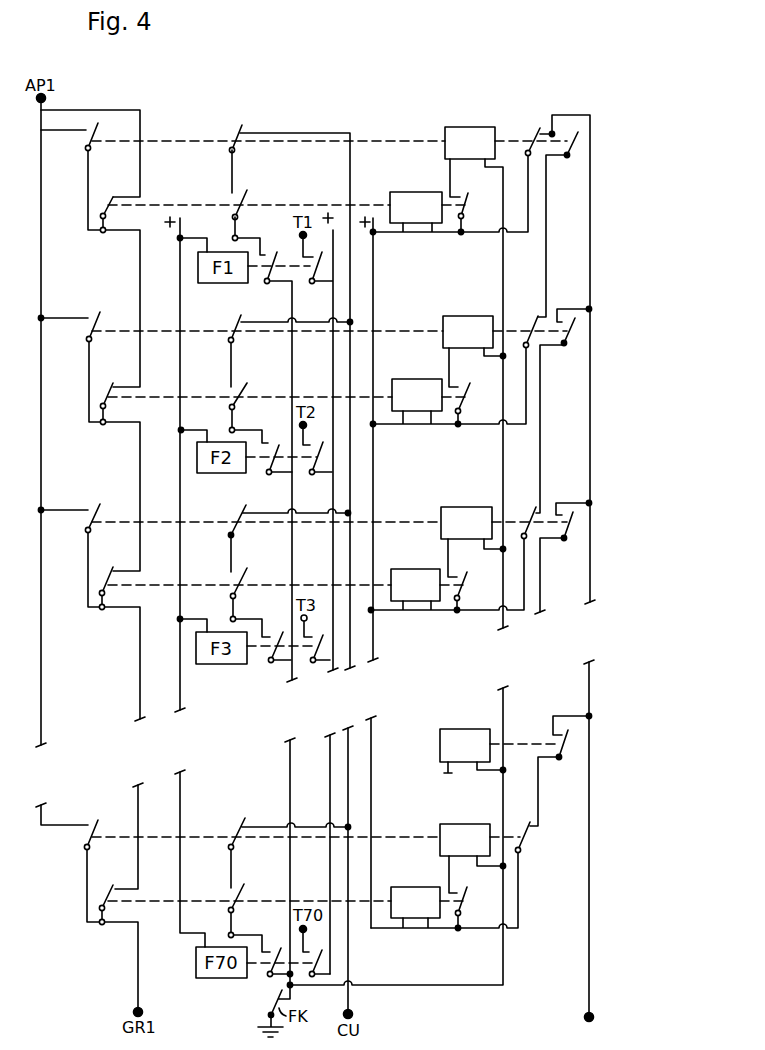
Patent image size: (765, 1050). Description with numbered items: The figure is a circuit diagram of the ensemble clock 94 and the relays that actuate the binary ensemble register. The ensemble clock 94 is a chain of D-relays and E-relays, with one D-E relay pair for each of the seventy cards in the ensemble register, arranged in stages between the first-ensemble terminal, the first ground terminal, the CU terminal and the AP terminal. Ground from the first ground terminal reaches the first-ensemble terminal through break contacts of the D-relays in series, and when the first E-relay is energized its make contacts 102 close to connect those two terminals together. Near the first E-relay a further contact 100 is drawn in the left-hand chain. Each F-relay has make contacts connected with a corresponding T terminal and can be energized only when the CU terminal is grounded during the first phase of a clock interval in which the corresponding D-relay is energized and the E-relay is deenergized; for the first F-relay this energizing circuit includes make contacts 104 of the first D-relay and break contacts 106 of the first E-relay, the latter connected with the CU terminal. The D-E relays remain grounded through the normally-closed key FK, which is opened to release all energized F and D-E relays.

The ensemble clock 94 is at (597, 97).
The switch contact 100 is at (110, 189).
The make contacts of relay E1 102 is at (90, 130).
The make contacts of relay D1 104 is at (250, 196).
The break contacts of relay E1 106 is at (234, 136).